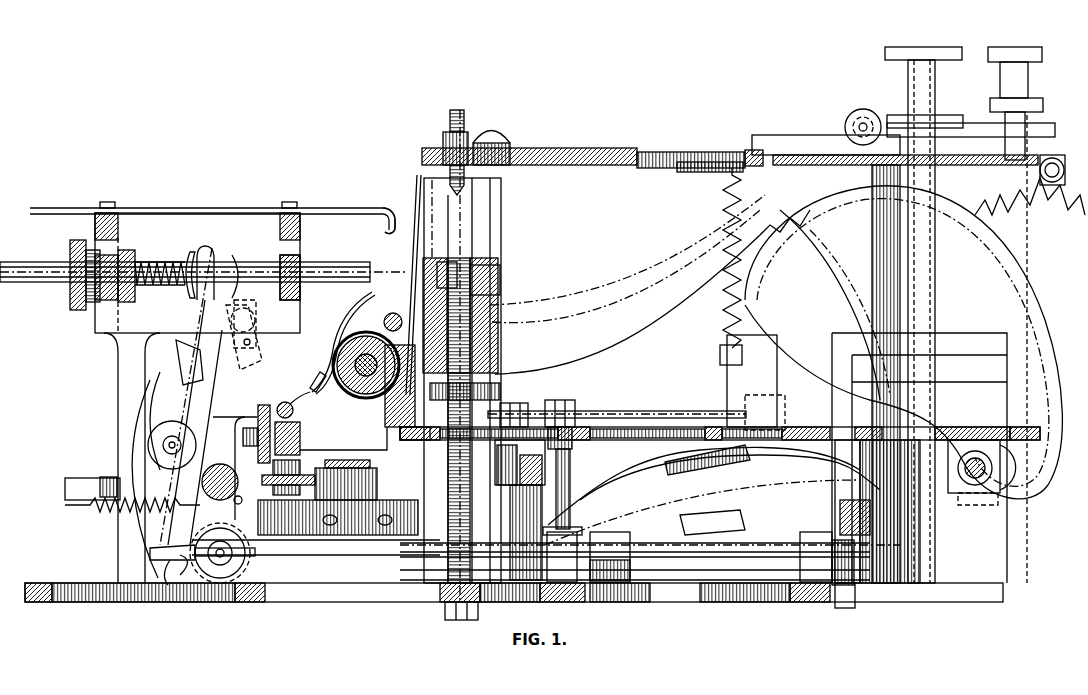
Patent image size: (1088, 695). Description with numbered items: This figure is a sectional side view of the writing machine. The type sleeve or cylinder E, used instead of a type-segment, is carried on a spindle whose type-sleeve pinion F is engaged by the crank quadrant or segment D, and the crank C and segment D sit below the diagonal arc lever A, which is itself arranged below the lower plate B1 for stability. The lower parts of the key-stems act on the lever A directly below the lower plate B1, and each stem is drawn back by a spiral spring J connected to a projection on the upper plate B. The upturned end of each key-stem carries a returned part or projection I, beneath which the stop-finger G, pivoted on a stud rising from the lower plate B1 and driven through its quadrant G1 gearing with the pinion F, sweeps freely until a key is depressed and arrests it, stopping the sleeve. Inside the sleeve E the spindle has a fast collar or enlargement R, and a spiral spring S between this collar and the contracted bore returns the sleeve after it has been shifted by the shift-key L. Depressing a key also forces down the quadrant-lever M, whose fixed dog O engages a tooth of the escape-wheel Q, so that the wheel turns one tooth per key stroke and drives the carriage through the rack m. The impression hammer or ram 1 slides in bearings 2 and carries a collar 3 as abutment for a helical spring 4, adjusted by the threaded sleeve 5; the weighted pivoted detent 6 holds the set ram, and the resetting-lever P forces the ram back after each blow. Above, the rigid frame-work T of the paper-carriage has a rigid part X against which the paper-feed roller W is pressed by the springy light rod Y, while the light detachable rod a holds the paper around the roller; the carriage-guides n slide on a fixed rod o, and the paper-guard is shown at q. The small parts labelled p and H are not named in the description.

The impression hammer or ram 1 is at (350, 270).
The bearings 2 is at (300, 265).
The collar 3 is at (192, 260).
The helical spring 4 is at (160, 268).
The threaded sleeve 5 is at (126, 258).
The weighted pivoted detent 6 is at (246, 360).
The resetting-lever P is at (205, 262).
The hook p is at (393, 231).
The rod H is at (414, 263).
The fast collar or enlargement R is at (450, 270).
The type sleeve or cylinder E is at (498, 287).
The upper plate B is at (612, 166).
The lower plate B1 is at (793, 430).
The spiral spring J is at (726, 252).
The spiral spring S is at (480, 345).
The quadrant G1 is at (495, 400).
The stop-finger G is at (572, 410).
The rigid part of the carriage X is at (405, 372).
The paper-guard q is at (346, 330).
The paper-feed roller W is at (366, 355).
The light detachable rod a is at (393, 316).
The light rod Y is at (285, 404).
The rigid frame-work of the carriage T is at (300, 436).
The carriage-guides n is at (228, 482).
The rack m is at (278, 482).
The rod o is at (245, 497).
The escape-wheel Q is at (385, 500).
The type-sleeve pinion F is at (440, 457).
The crank quadrant or segment D is at (517, 455).
The diagonal arc lever A is at (602, 475).
The quadrant-lever M is at (592, 500).
The crank C is at (838, 532).
The fixed dog O is at (420, 566).
The returned part or projection I is at (730, 355).
The shift-key L is at (1028, 80).